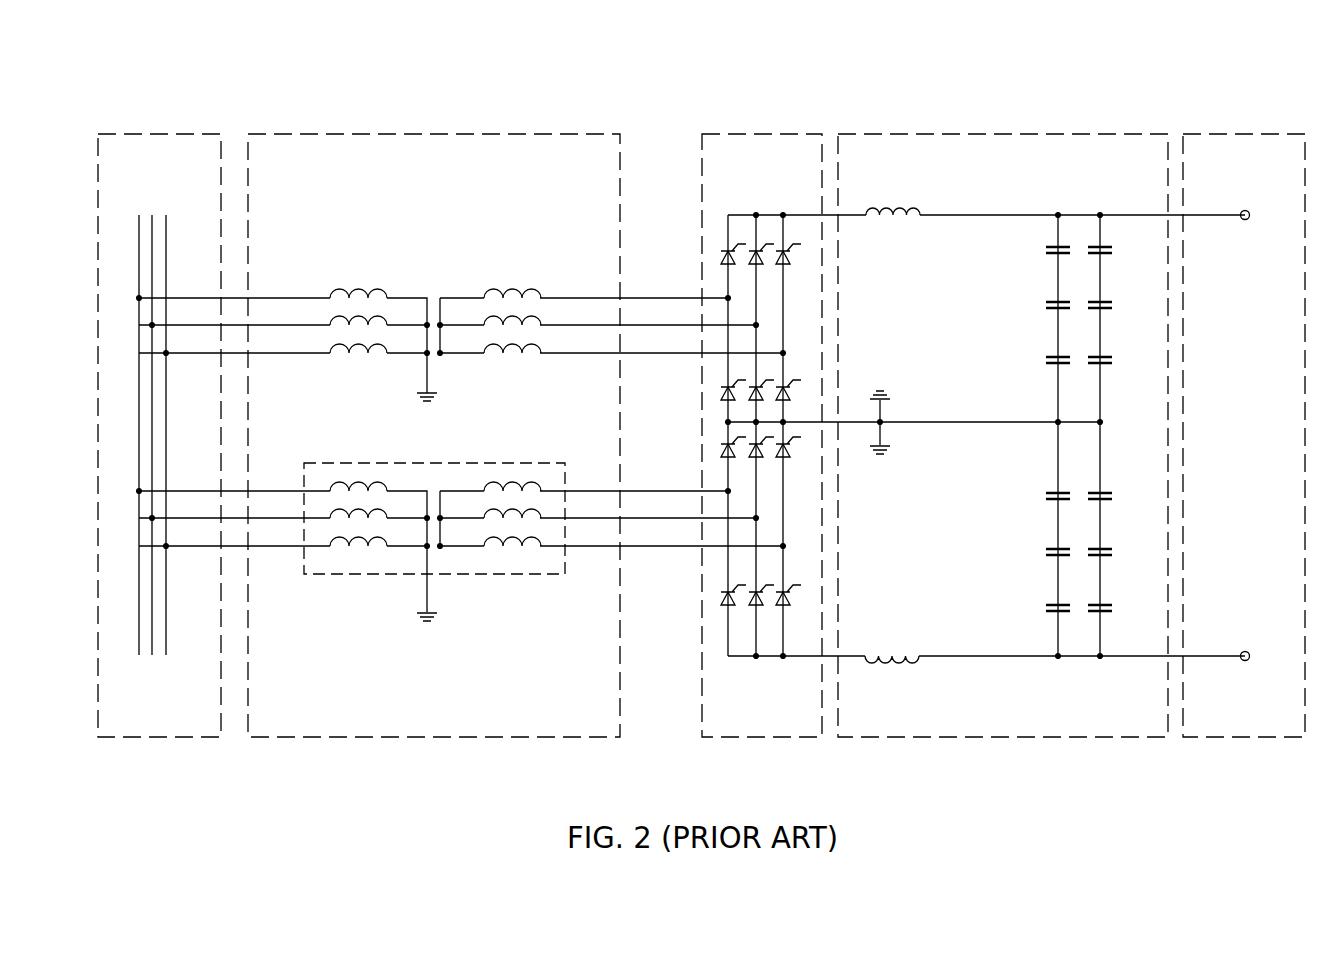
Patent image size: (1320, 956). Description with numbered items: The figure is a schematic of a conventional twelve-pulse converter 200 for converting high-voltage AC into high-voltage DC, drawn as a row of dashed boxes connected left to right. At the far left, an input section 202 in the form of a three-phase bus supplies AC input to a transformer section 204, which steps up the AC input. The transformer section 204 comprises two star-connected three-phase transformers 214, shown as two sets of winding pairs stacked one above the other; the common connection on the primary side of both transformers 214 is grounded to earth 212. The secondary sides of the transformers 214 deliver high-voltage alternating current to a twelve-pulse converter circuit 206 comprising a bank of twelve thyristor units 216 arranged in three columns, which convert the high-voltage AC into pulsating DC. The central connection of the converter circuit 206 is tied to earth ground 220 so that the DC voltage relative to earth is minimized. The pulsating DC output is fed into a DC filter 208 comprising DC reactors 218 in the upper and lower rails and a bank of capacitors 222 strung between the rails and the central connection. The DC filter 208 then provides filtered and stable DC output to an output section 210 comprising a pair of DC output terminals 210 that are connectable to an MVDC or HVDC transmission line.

The 12-pulse converter 200 is at (357, 60).
The input section 202 is at (147, 128).
The transformer section 204 is at (503, 128).
The 12-pulse converter circuit 206 is at (750, 128).
The DC filter 208 is at (887, 128).
The output section 210 is at (1230, 128).
The earth 212 is at (436, 400).
The star-connected three-phase transformers 214 is at (527, 578).
The thyristor units 216 is at (720, 251).
The DC reactors 218 is at (903, 214).
The earth ground 220 is at (935, 430).
The bank of capacitors 222 is at (1045, 306).